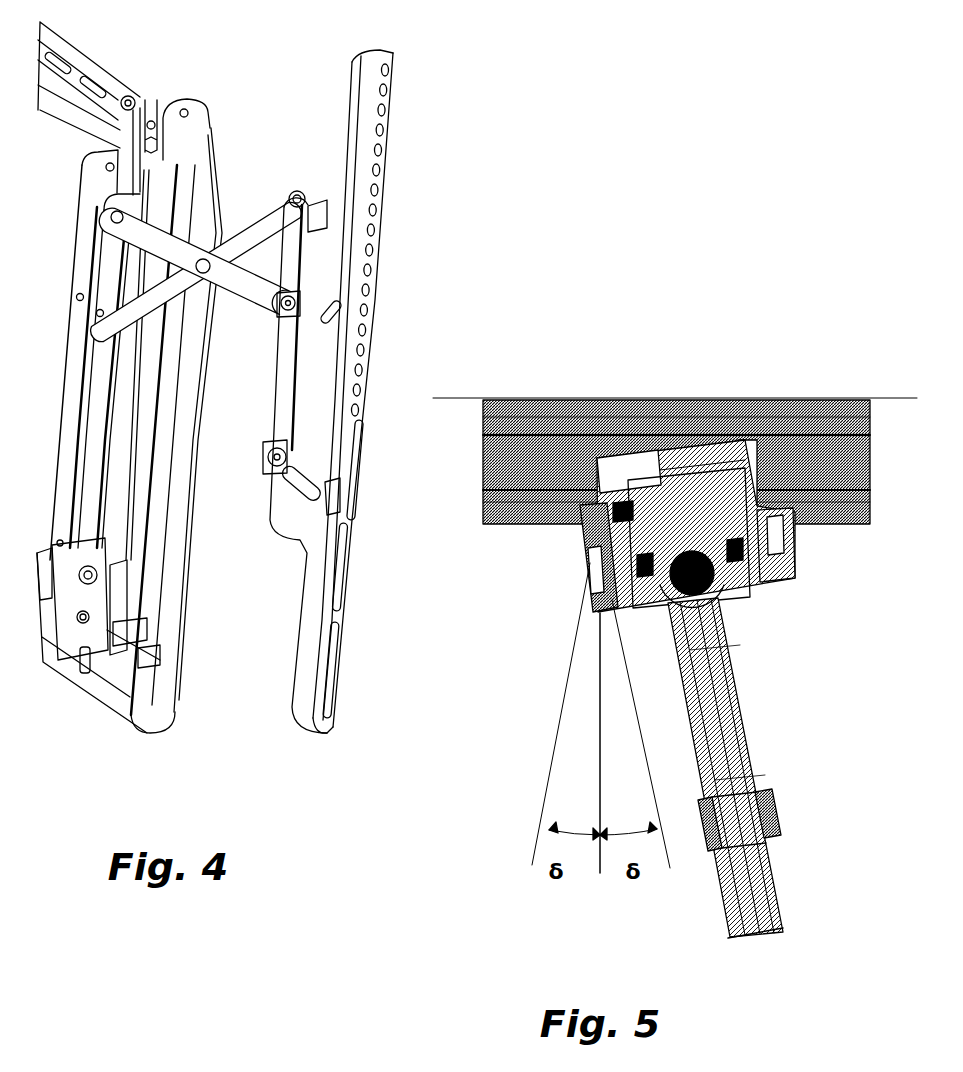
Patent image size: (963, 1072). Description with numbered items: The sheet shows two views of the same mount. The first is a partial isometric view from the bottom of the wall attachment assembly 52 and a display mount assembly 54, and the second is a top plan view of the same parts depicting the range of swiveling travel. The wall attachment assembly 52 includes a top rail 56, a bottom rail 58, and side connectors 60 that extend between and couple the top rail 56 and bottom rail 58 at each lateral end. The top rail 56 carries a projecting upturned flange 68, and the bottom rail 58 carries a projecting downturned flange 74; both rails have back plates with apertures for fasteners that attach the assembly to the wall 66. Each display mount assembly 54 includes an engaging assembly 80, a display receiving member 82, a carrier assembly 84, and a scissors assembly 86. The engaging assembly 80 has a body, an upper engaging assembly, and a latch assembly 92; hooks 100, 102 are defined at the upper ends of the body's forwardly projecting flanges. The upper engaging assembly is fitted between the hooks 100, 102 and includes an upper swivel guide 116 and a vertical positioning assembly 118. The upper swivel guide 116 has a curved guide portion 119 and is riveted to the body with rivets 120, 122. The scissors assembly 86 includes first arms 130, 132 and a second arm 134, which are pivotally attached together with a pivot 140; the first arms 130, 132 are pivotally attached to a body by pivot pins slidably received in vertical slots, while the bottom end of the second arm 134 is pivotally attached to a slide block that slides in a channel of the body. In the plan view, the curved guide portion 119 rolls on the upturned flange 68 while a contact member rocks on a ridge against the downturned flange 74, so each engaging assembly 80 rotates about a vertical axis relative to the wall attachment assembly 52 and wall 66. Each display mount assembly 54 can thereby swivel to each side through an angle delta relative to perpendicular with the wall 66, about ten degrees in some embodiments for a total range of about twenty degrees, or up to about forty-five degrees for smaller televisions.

In FIG. 4, the wall attachment assembly 52 is at (118, 97).
In FIG. 4, the display mount assembly 54 is at (152, 112).
In FIG. 4, the top rail 56 is at (68, 63).
In FIG. 5, the top rail 56 is at (513, 477).
In FIG. 4, the bottom rail 58 is at (95, 687).
In FIG. 4, the side connector 60 is at (170, 547).
In FIG. 5, the wall 66 is at (827, 397).
In FIG. 4, the upturned flange 68 is at (113, 95).
In FIG. 5, the upturned flange 68 is at (827, 497).
In FIG. 4, the downturned flange 74 is at (143, 627).
In FIG. 4, the engaging assembly 80 is at (85, 243).
In FIG. 4, the display receiving member 82 is at (393, 103).
In FIG. 4, the carrier assembly 84 is at (300, 260).
In FIG. 4, the scissors assembly 86 is at (220, 243).
In FIG. 4, the latch assembly 92 is at (150, 653).
In FIG. 5, the hook 100 is at (617, 460).
In FIG. 5, the hook 102 is at (728, 435).
In FIG. 5, the upper swivel guide 116 is at (677, 490).
In FIG. 5, the vertical positioning assembly 118 is at (727, 588).
In FIG. 5, the curved guide portion 119 is at (655, 470).
In FIG. 5, the rivet 120 is at (590, 590).
In FIG. 5, the rivet 122 is at (790, 550).
In FIG. 5, the first arm 130 is at (733, 907).
In FIG. 5, the first arm 132 is at (757, 873).
In FIG. 5, the second arm 134 is at (717, 712).
In FIG. 5, the pivot 140 is at (763, 803).